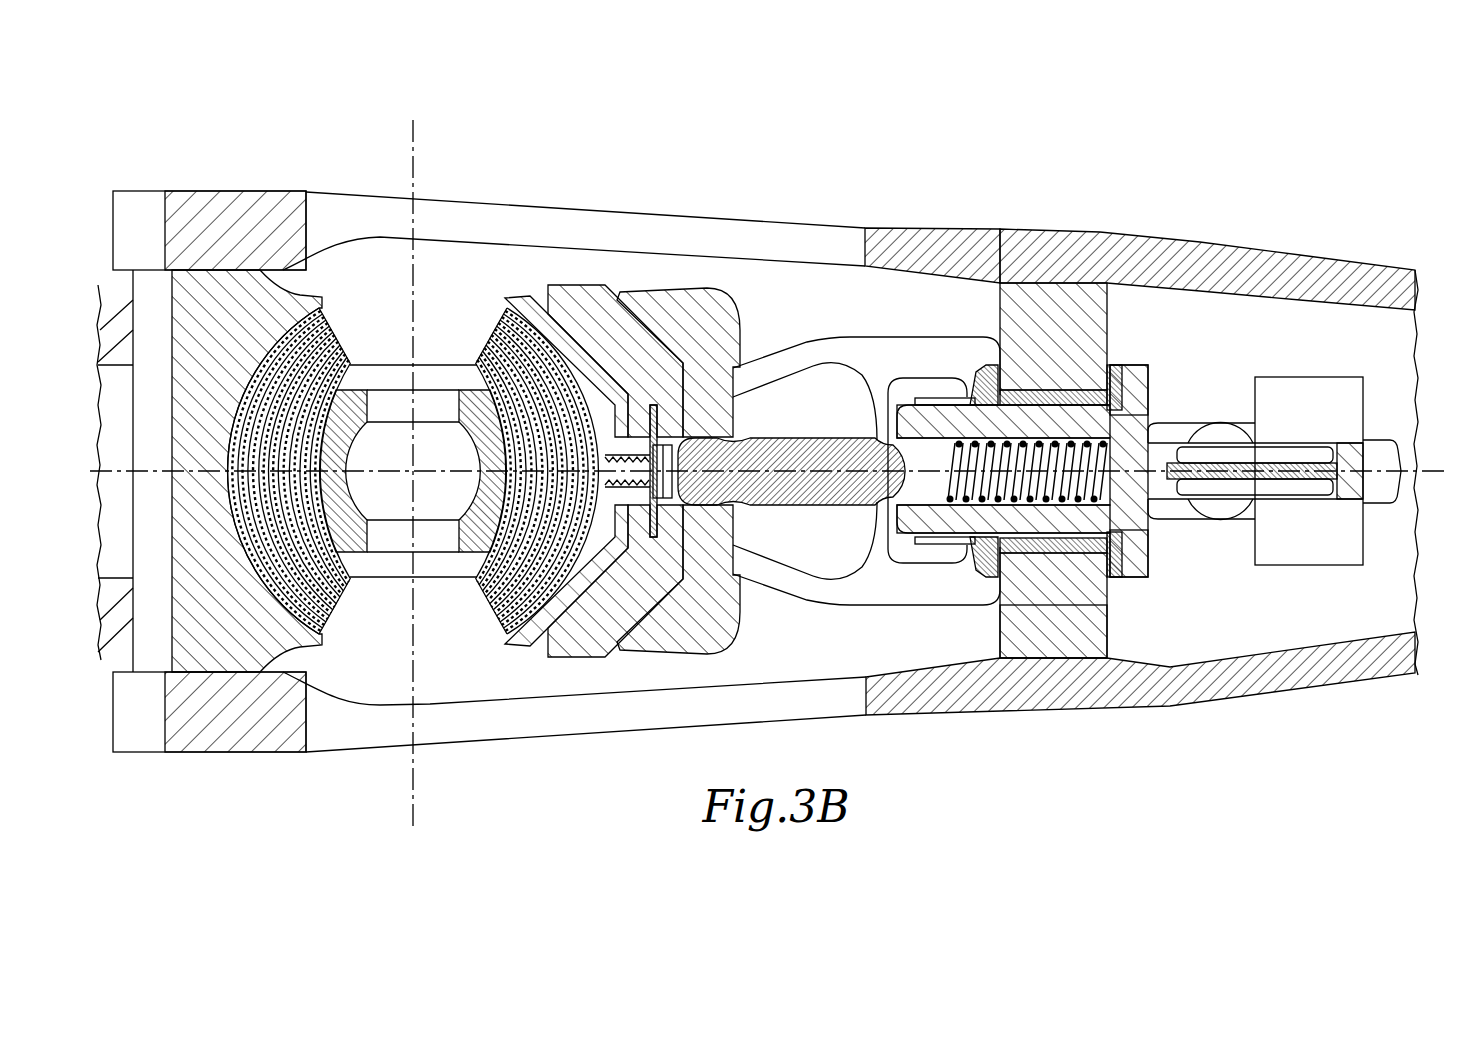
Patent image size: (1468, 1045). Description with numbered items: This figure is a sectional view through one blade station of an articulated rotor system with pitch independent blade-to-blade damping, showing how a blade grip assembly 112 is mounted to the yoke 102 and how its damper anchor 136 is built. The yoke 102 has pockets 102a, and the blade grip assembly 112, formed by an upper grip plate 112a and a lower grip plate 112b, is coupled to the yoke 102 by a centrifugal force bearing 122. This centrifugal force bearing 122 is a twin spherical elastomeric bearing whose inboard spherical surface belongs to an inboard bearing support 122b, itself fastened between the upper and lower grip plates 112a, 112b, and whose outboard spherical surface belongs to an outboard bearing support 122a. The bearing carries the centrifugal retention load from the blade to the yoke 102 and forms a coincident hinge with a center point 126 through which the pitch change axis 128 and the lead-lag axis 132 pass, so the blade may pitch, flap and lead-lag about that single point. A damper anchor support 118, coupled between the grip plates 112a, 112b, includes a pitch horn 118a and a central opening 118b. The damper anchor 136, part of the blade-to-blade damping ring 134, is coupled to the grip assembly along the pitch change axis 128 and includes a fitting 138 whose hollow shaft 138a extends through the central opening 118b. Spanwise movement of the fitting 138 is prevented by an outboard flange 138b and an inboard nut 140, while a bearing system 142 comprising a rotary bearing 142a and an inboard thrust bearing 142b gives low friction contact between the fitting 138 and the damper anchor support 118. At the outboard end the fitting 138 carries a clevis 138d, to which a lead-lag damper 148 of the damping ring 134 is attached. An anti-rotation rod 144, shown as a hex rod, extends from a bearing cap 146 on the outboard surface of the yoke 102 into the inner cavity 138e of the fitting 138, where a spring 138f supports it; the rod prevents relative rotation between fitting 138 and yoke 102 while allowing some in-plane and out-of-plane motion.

The yoke 102 is at (596, 296).
The pockets 102a is at (565, 300).
The blade grip assembly 112 is at (910, 246).
The upper grip plate 112a is at (1005, 248).
The lower grip plate 112b is at (1040, 690).
The damper anchor support 118 is at (1100, 620).
The pitch horn 118a is at (790, 358).
The central opening 118b is at (1045, 610).
The centrifugal force bearing 122 is at (340, 330).
The outboard bearing support 122a is at (508, 300).
The inboard bearing support 122b is at (228, 290).
The coincident hinge point 126 is at (425, 482).
The pitch change axis 128 is at (1424, 470).
The lead-lag axis 132 is at (422, 775).
The blade-to-blade damping ring 134 is at (1200, 425).
The damper anchor 136 is at (895, 560).
The fitting 138 is at (1158, 580).
The hollow shaft 138a is at (1030, 420).
The outboard flange 138b is at (1150, 418).
The clevis 138d is at (1310, 392).
The inner cavity 138e is at (1148, 548).
The spring 138f is at (1150, 518).
The inboard nut 140 is at (932, 552).
The bearing system 142 is at (980, 572).
The rotary bearing 142a is at (1062, 562).
The inboard thrust bearing 142b is at (985, 375).
The anti-rotation rod 144 is at (828, 445).
The bearing cap 146 is at (682, 310).
The lead-lag damper 148 is at (1215, 445).